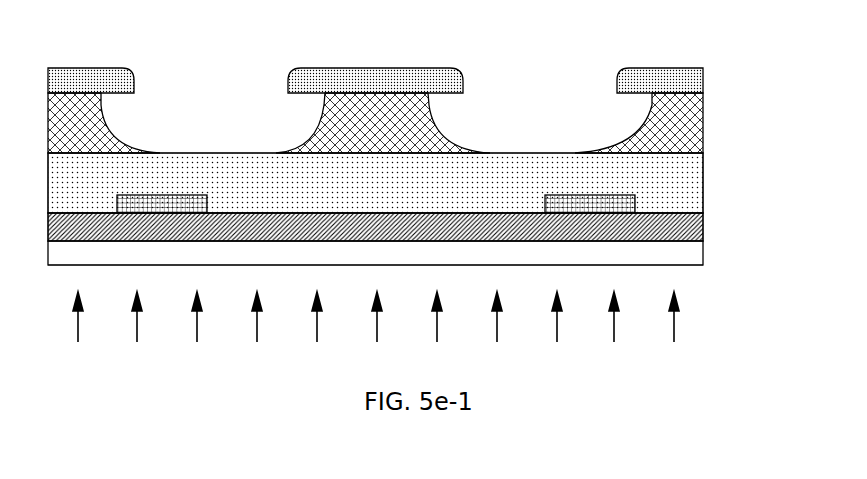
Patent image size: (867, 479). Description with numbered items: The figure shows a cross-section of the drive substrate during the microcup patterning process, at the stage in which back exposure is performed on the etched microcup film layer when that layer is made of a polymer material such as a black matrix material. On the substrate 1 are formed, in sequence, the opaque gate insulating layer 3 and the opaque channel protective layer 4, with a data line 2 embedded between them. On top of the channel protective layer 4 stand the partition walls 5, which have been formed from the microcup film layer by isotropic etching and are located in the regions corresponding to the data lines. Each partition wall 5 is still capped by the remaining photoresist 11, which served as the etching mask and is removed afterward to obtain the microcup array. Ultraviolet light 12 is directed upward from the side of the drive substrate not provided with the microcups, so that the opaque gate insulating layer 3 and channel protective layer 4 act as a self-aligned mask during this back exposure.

The substrate 1 is at (693, 258).
The data line 2 is at (635, 198).
The gate insulating layer 3 is at (703, 222).
The channel protective layer 4 is at (677, 175).
The partition wall 5 is at (652, 120).
The photoresist 11 is at (652, 69).
The ultraviolet light 12 is at (675, 325).